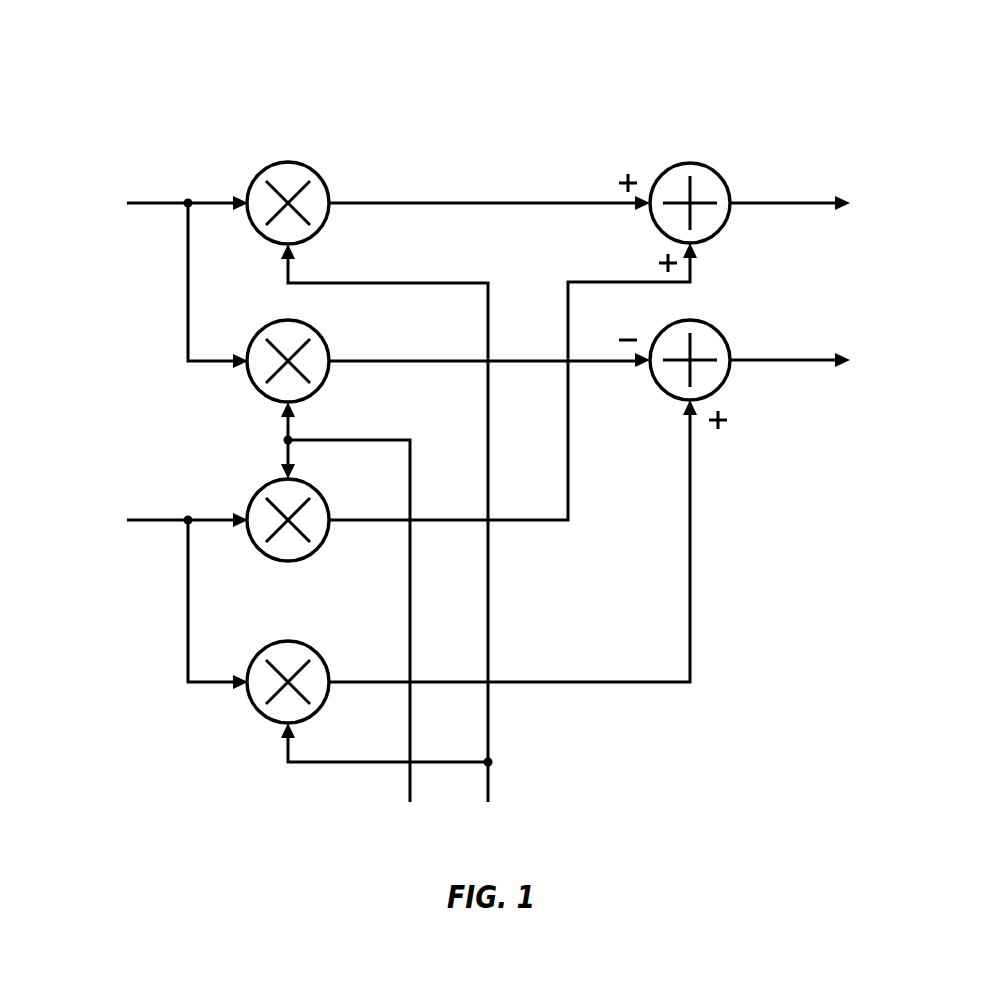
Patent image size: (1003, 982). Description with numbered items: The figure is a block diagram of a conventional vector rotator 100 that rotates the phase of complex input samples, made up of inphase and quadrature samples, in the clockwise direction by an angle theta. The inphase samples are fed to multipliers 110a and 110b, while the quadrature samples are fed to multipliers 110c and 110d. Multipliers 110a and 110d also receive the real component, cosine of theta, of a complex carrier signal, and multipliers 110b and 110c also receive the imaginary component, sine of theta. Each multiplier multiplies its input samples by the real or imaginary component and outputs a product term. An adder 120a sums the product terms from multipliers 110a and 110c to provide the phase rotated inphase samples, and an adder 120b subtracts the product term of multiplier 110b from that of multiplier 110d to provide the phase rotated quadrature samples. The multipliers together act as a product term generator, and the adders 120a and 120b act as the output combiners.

The vector rotator 100 is at (936, 88).
The multiplier 110a is at (316, 172).
The multiplier 110b is at (316, 330).
The multiplier 110c is at (316, 490).
The multiplier 110d is at (316, 651).
The adder 120a is at (718, 172).
The adder 120b is at (718, 329).